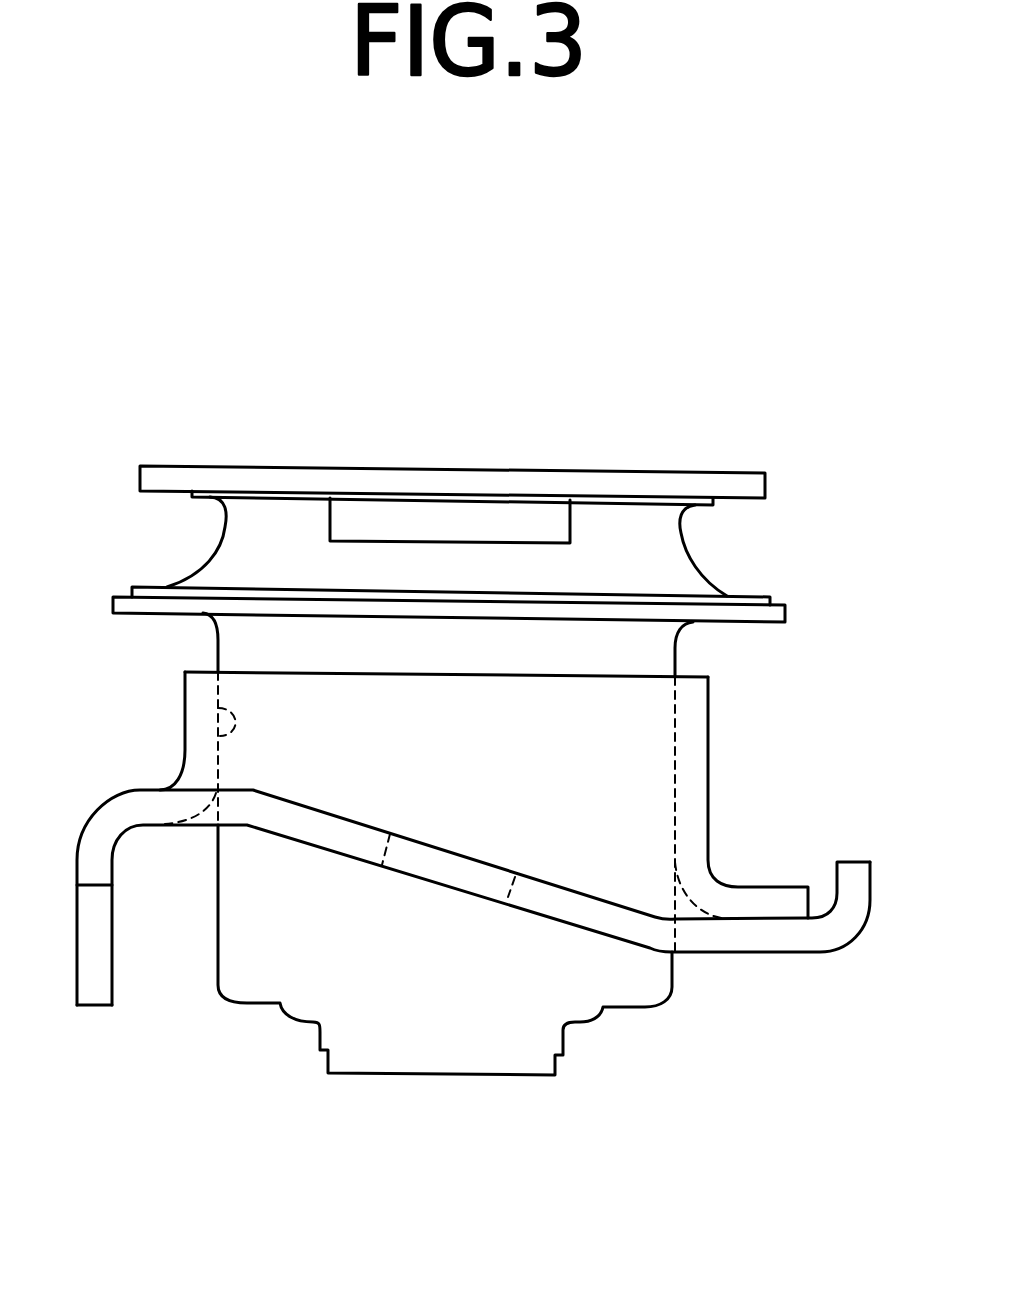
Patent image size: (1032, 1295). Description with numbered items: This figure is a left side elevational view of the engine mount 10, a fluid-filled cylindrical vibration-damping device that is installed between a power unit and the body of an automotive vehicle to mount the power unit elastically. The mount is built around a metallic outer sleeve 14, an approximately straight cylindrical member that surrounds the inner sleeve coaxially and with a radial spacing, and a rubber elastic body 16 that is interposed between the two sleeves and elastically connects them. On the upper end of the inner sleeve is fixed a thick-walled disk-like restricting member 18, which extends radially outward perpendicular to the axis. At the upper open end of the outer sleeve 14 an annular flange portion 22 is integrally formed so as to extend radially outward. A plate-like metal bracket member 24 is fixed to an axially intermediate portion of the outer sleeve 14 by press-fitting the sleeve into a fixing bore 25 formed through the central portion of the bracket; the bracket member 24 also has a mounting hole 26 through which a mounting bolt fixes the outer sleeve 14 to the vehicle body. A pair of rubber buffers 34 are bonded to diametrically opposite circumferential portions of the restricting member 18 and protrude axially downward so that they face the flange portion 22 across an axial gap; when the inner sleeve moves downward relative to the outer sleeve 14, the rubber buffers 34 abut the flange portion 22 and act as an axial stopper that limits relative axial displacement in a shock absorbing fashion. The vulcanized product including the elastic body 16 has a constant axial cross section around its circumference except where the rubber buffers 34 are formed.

The engine mount 10 is at (668, 398).
The outer sleeve 14 is at (240, 965).
The rubber elastic body 16 is at (250, 534).
The restricting member 18 is at (279, 481).
The flange portion 22 is at (760, 613).
The bracket member 24 is at (645, 792).
The fixing bore 25 is at (237, 737).
The mounting hole 26 is at (505, 888).
The rubber buffer 34 is at (501, 510).